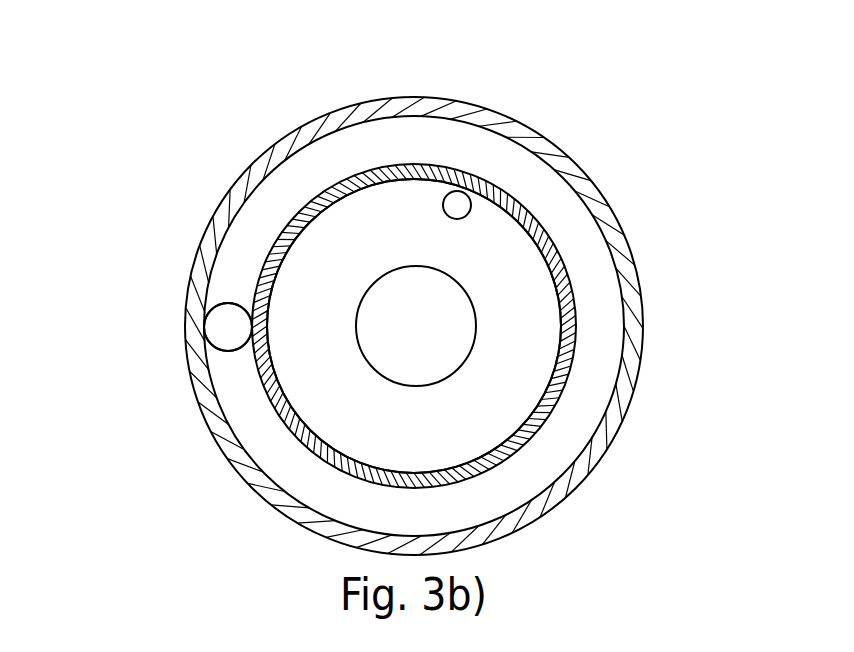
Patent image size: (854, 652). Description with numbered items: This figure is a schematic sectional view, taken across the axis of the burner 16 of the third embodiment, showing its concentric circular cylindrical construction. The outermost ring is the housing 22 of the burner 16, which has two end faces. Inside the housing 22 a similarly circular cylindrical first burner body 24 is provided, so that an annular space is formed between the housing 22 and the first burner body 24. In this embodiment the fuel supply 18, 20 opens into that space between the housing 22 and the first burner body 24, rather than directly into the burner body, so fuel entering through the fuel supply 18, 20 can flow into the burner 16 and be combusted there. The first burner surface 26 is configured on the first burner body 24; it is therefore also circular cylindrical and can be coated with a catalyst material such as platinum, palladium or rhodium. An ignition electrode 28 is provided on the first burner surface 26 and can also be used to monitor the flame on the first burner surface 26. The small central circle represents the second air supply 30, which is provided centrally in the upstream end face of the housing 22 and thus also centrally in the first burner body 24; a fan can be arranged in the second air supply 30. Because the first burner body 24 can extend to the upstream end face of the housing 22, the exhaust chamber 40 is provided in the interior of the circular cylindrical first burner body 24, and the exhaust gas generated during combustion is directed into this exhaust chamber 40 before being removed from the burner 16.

The burner 16 is at (231, 181).
The fuel supply 18 is at (223, 328).
The outlet channel 20 is at (175, 327).
The housing 22 is at (442, 105).
The first burner body 24 is at (470, 172).
The first burner surface 26 is at (437, 271).
The ignition electrode 28 is at (463, 200).
The second air supply 30 is at (437, 325).
The exhaust chamber 40 is at (343, 367).